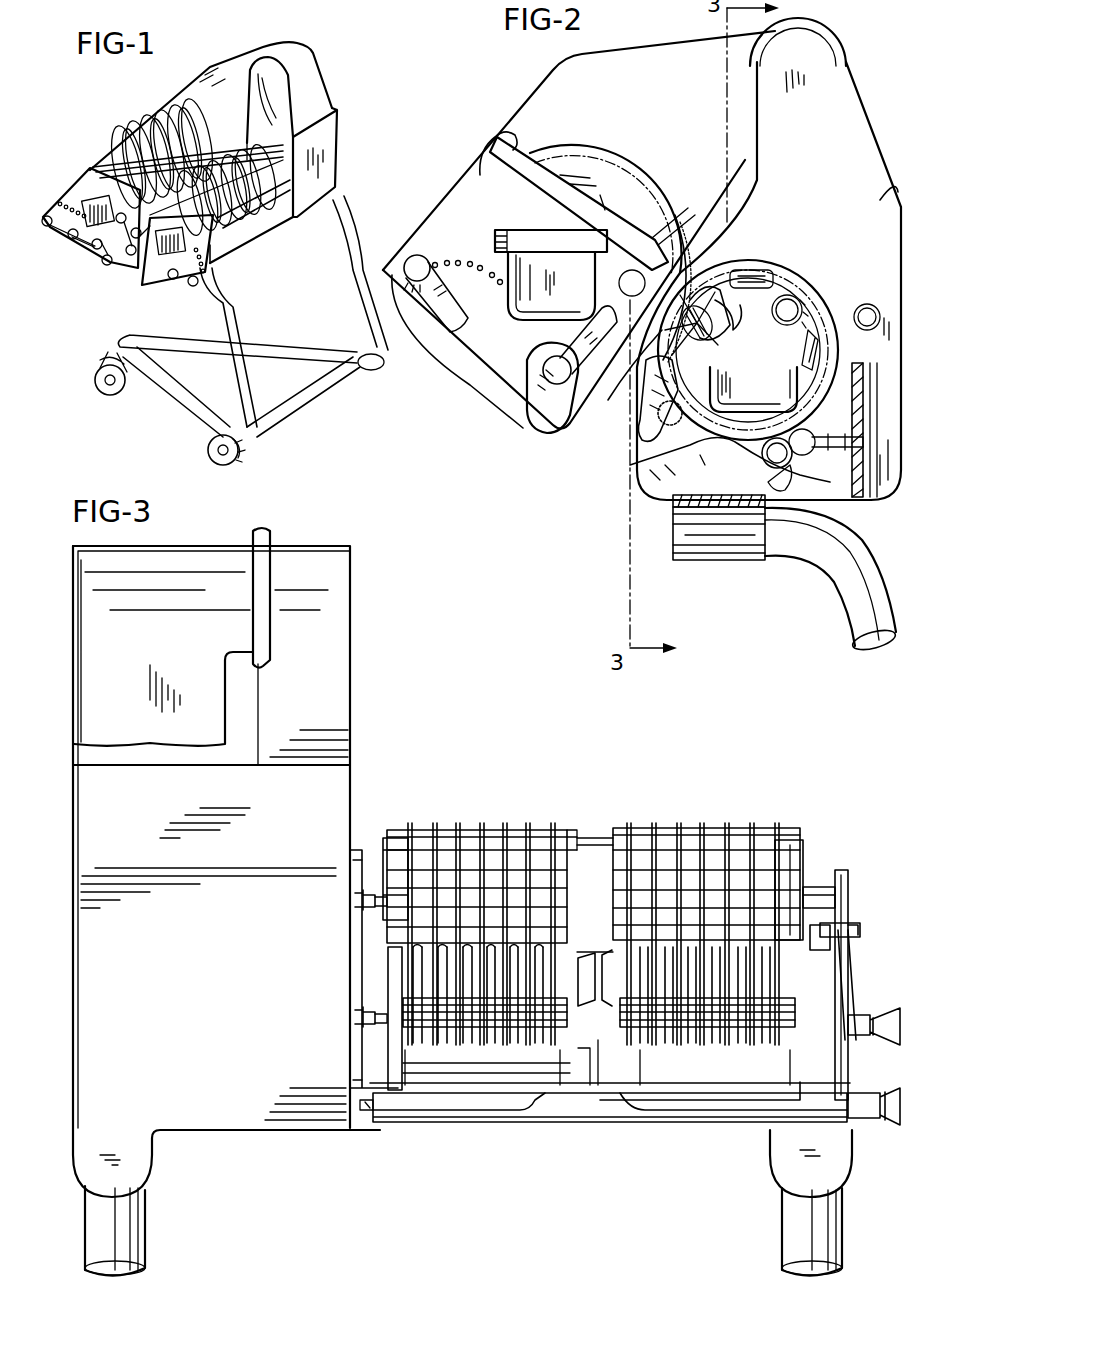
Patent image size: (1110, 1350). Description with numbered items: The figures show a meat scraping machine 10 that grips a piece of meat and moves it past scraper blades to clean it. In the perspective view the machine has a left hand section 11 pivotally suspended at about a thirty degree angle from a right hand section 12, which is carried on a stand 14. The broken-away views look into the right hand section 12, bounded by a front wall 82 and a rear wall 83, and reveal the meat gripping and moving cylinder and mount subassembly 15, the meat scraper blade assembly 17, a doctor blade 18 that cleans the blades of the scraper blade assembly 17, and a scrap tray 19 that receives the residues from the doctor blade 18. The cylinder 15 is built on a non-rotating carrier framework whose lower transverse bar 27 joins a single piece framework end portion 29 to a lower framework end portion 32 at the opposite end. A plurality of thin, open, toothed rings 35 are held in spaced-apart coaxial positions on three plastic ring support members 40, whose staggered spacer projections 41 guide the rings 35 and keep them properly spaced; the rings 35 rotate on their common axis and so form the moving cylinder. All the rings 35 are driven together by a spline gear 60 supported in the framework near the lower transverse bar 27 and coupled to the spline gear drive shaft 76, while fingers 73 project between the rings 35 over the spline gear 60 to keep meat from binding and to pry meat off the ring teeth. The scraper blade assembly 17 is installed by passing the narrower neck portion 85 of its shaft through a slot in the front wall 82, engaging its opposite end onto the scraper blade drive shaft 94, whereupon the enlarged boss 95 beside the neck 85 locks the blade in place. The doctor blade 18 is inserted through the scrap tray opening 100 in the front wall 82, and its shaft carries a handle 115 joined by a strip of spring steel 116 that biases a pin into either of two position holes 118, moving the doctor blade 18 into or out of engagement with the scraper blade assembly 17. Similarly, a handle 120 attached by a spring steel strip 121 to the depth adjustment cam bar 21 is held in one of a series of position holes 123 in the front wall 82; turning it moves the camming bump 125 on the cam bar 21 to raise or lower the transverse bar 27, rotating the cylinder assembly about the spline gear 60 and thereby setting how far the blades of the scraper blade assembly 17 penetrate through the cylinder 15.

In FIG. 1, the meat scraping machine 10 is at (286, 38).
In FIG. 2, the meat scraping machine 10 is at (849, 52).
In FIG. 3, the meat scraping machine 10 is at (435, 670).
In FIG. 1, the left hand section 11 is at (221, 64).
In FIG. 2, the left hand section 11 is at (510, 104).
In FIG. 3, the left hand section 11 is at (70, 583).
In FIG. 1, the right hand section 12 is at (329, 137).
In FIG. 2, the right hand section 12 is at (877, 151).
In FIG. 3, the right hand section 12 is at (352, 606).
In FIG. 1, the stand 14 is at (346, 232).
In FIG. 2, the stand 14 is at (836, 600).
In FIG. 3, the stand 14 is at (135, 1220).
In FIG. 1, the meat gripping and moving cylinder and mount subassembly 15 is at (230, 186).
In FIG. 2, the meat gripping and moving cylinder and mount subassembly 15 is at (566, 135).
In FIG. 3, the meat gripping and moving cylinder and mount subassembly 15 is at (513, 820).
In FIG. 2, the meat scraper blade assembly 17 is at (708, 278).
In FIG. 3, the meat scraper blade assembly 17 is at (795, 855).
In FIG. 2, the doctor blade 18 is at (752, 345).
In FIG. 2, the scrap tray 19 is at (797, 380).
In FIG. 3, the scrap tray 19 is at (592, 1085).
In FIG. 3, the depth adjustment cam bar 21 is at (718, 1100).
In FIG. 2, the lower transverse bar 27 is at (765, 448).
In FIG. 3, the single piece framework end portion 29 is at (395, 1092).
In FIG. 3, the lower framework end portion 32 is at (790, 1085).
In FIG. 2, the rings 35 is at (810, 292).
In FIG. 3, the rings 35 is at (700, 828).
In FIG. 3, the ring support members 40 is at (613, 838).
In FIG. 3, the spacer projections 41 is at (445, 830).
In FIG. 2, the spline gear 60 is at (690, 408).
In FIG. 3, the spline gear 60 is at (460, 1048).
In FIG. 2, the fingers 73 is at (655, 378).
In FIG. 3, the fingers 73 is at (520, 1048).
In FIG. 3, the spline gear drive shaft 76 is at (358, 1016).
In FIG. 3, the front wall 82 is at (848, 872).
In FIG. 2, the rear wall 83 is at (896, 187).
In FIG. 3, the rear wall 83 is at (350, 777).
In FIG. 3, the neck portion 85 is at (818, 887).
In FIG. 3, the scraper blade drive shaft 94 is at (360, 900).
In FIG. 3, the enlarged boss 95 is at (848, 895).
In FIG. 2, the scrap tray opening 100 is at (547, 237).
In FIG. 2, the handle 115 is at (535, 395).
In FIG. 3, the handle 115 is at (905, 1015).
In FIG. 2, the strip of spring steel 116 is at (552, 378).
In FIG. 3, the strip of spring steel 116 is at (866, 980).
In FIG. 2, the position holes 118 is at (552, 385).
In FIG. 2, the handle 120 is at (413, 266).
In FIG. 3, the handle 120 is at (893, 1122).
In FIG. 2, the spring steel strip 121 is at (443, 318).
In FIG. 2, the position holes 123 is at (470, 258).
In FIG. 2, the camming bump 125 is at (790, 476).
In FIG. 3, the camming bump 125 is at (575, 1095).